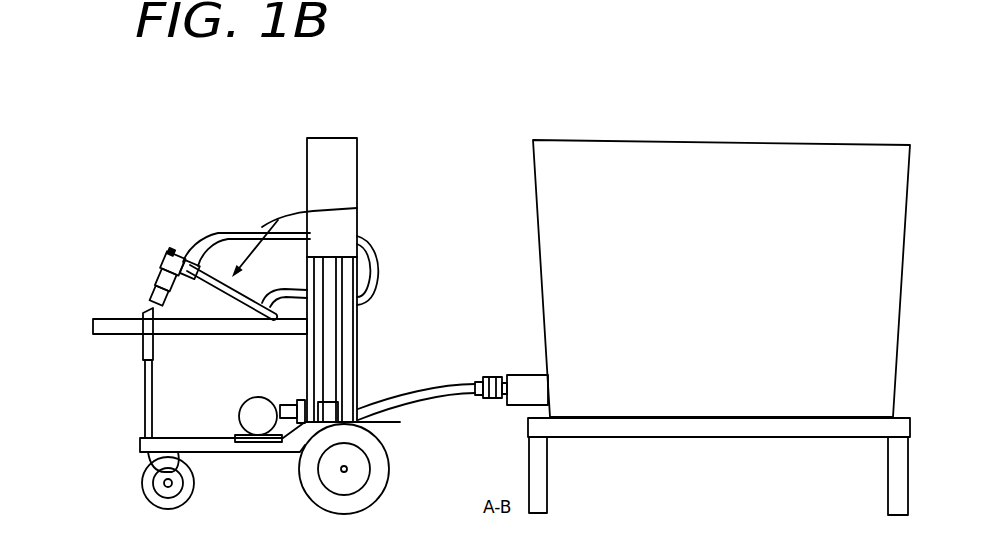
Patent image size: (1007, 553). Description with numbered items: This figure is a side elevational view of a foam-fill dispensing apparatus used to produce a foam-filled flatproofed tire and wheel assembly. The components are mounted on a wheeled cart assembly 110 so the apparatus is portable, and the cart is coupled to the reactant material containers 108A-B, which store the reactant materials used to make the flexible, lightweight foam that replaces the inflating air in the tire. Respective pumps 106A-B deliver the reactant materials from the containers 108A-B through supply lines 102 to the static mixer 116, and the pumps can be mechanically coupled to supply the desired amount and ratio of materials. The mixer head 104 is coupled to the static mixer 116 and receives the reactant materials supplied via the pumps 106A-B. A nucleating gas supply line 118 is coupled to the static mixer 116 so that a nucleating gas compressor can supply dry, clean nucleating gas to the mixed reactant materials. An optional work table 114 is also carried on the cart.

The supply lines 102 is at (227, 228).
The mixer head 104 is at (178, 256).
The pumps 106A-B is at (240, 416).
The reactant material containers 108A-B is at (719, 327).
The wheeled cart assembly 110 is at (110, 413).
The work table 114 is at (123, 318).
The static mixer 116 is at (357, 208).
The nucleating gas supply line 118 is at (373, 247).